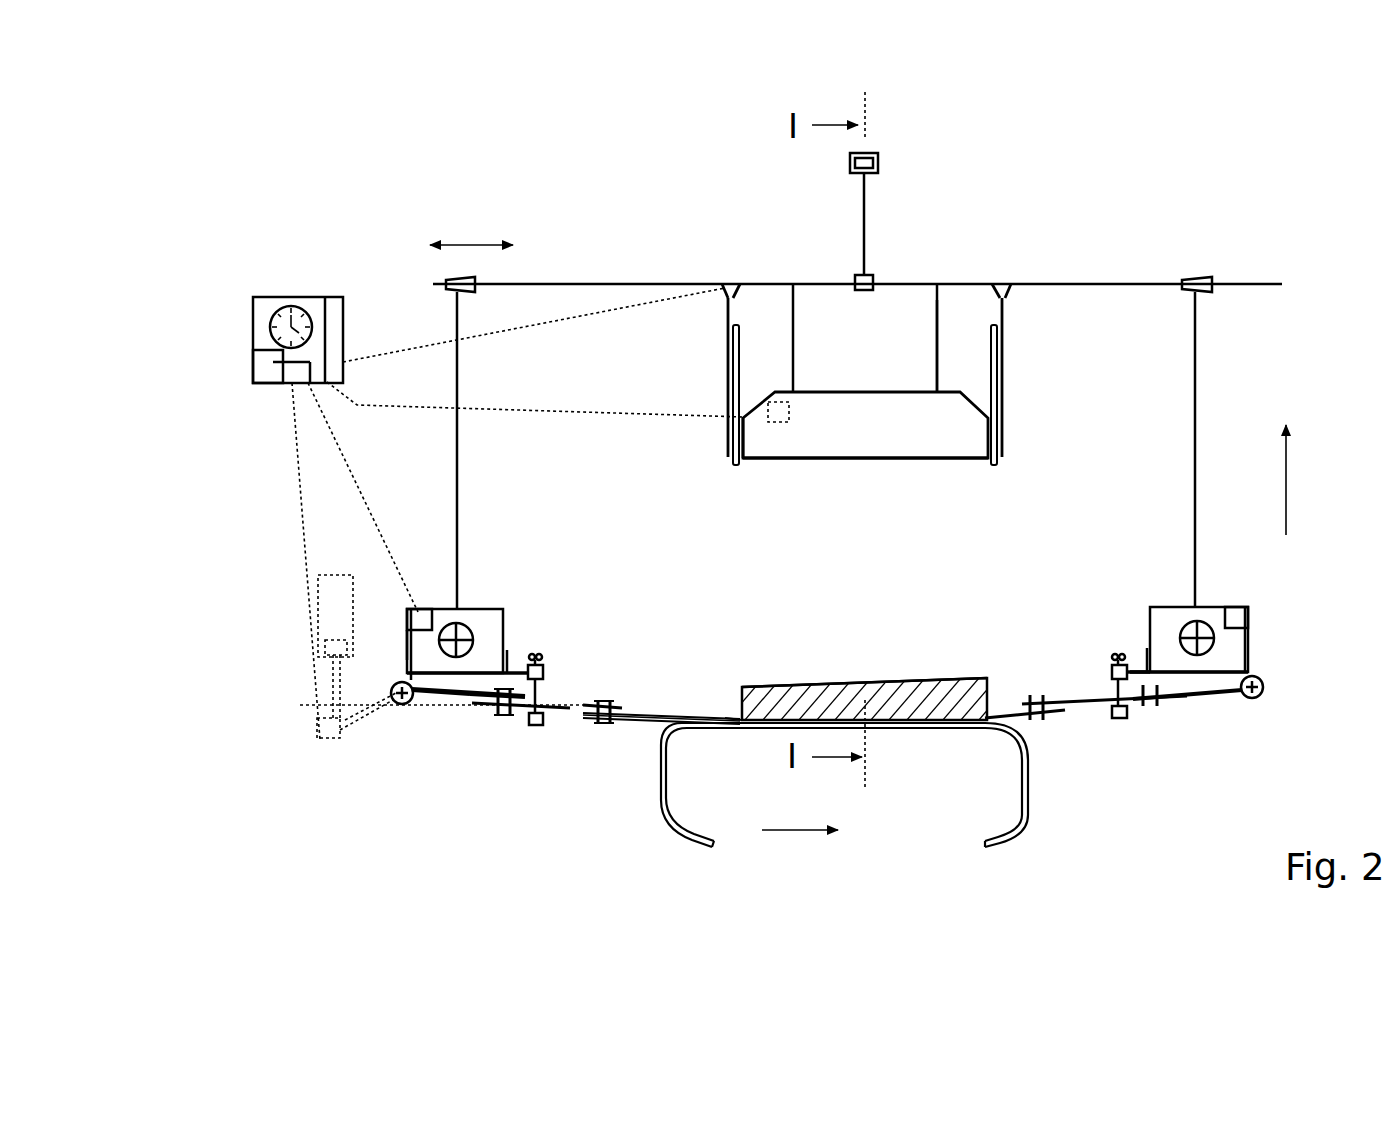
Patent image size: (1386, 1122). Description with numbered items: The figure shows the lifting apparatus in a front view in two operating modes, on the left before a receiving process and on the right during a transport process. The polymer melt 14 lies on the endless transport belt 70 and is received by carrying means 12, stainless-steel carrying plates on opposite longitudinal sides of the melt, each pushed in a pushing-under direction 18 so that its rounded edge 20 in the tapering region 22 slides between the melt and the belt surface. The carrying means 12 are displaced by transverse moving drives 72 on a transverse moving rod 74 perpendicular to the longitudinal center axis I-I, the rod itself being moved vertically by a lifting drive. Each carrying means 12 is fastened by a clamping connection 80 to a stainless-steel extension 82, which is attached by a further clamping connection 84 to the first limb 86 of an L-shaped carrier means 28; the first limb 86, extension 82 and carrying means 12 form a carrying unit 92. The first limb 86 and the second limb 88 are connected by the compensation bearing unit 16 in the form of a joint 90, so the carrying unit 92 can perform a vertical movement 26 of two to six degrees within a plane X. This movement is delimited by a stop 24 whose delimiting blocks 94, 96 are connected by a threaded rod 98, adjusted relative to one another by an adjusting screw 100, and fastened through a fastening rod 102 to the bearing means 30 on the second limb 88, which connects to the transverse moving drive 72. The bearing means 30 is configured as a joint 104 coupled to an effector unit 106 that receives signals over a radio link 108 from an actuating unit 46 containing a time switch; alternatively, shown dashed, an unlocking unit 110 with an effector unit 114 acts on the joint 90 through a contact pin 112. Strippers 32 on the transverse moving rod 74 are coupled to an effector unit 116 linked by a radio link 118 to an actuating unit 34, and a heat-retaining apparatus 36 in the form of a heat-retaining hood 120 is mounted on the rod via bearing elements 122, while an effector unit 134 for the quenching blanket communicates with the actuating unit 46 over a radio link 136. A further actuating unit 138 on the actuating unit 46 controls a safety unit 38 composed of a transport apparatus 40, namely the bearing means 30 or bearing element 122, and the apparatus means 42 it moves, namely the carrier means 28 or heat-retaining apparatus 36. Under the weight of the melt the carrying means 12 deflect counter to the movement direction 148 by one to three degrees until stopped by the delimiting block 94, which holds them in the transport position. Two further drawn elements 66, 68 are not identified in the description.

The carrying means 12 is at (629, 752).
The polymer melt 14 is at (910, 697).
The compensation bearing unit 16 is at (397, 718).
The pushing-under direction 18 is at (805, 833).
The rounded edge 20 is at (740, 688).
The tapering region 22 is at (728, 700).
The stop 24 is at (1111, 628).
The vertical movement 26 is at (630, 684).
The carrier means 28 is at (396, 594).
The bearing means 30 is at (511, 615).
The strippers 32 is at (727, 320).
The actuating unit 34 is at (335, 297).
The heat-retaining apparatus 36 is at (771, 468).
The safety unit 38 is at (605, 250).
The transport apparatus 40 is at (808, 351).
The apparatus means 42 is at (852, 470).
The actuating unit 46 is at (263, 297).
The sensor housing 66 is at (880, 165).
The sensor 68 is at (870, 158).
The endless transport belt 70 is at (1000, 850).
The transverse moving drive 72 is at (1205, 278).
The transverse moving rod 74 is at (1055, 284).
The clamping connection 80 is at (594, 722).
The extension 82 is at (550, 712).
The clamping connection 84 is at (504, 715).
The first limb 86 is at (437, 708).
The second limb 88 is at (407, 640).
The joint 90 is at (411, 707).
The carrying unit 92 is at (478, 720).
The delimiting block 94 is at (535, 728).
The delimiting block 96 is at (545, 668).
The threaded rod 98 is at (1116, 720).
The adjusting screw 100 is at (1113, 660).
The fastening rod 102 is at (1140, 670).
The joint 104 is at (463, 632).
The effector unit 106 is at (421, 609).
The radio link 108 is at (337, 445).
The unlocking unit 110 is at (333, 596).
The contact pin 112 is at (338, 742).
The effector unit 114 is at (320, 730).
The effector unit 116 is at (728, 298).
The radio link 118 is at (428, 343).
The heat-retaining hood 120 is at (907, 462).
The bearing elements 122 is at (938, 313).
The effector unit 134 is at (771, 402).
The radio link 136 is at (383, 407).
The actuating unit 138 is at (263, 368).
The movement direction 148 is at (1286, 483).
The plane X is at (300, 703).